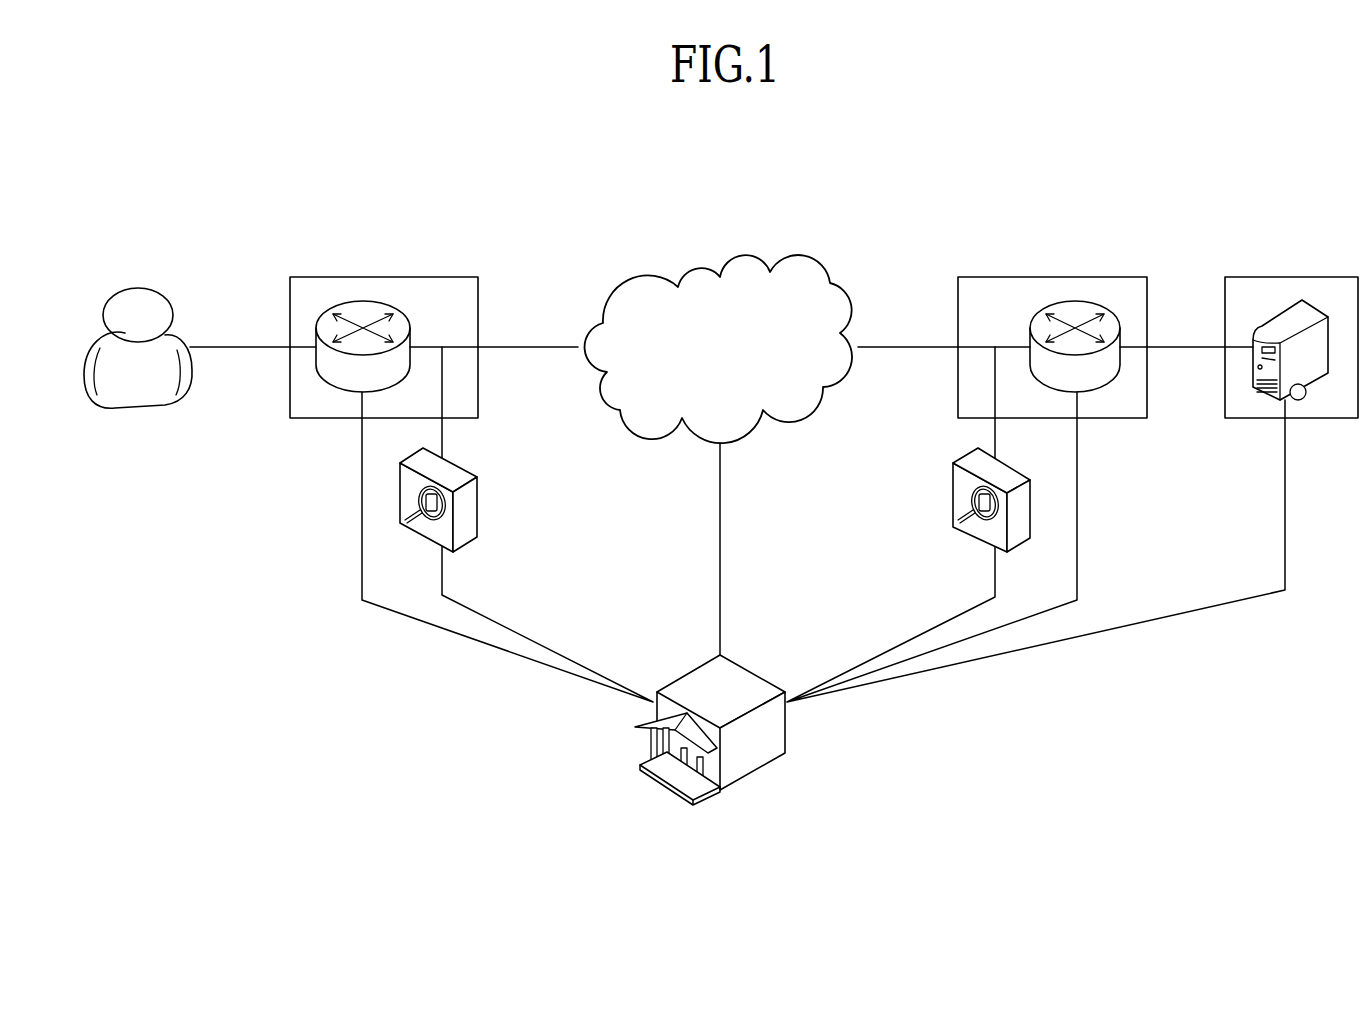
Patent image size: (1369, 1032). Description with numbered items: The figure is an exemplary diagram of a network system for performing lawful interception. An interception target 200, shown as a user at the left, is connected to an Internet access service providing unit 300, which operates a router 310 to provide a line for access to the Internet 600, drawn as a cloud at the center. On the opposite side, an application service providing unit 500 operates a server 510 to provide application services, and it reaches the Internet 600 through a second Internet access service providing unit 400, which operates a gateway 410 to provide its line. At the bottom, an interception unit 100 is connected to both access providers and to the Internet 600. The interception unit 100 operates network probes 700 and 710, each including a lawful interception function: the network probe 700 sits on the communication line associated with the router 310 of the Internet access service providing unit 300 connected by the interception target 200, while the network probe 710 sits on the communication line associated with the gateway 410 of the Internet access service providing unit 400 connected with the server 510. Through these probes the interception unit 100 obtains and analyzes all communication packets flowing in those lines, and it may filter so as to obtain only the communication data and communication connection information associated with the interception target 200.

The interception unit 100 is at (667, 785).
The interception target 200 is at (137, 288).
The Internet access service providing unit 300 is at (383, 277).
The router 310 is at (347, 303).
The Internet access service providing unit 400 is at (1050, 277).
The gateway 410 is at (1087, 303).
The application service providing unit 500 is at (1288, 277).
The server 510 is at (1316, 305).
The Internet 600 is at (748, 257).
The network probe 700 is at (477, 508).
The network probe 710 is at (953, 490).